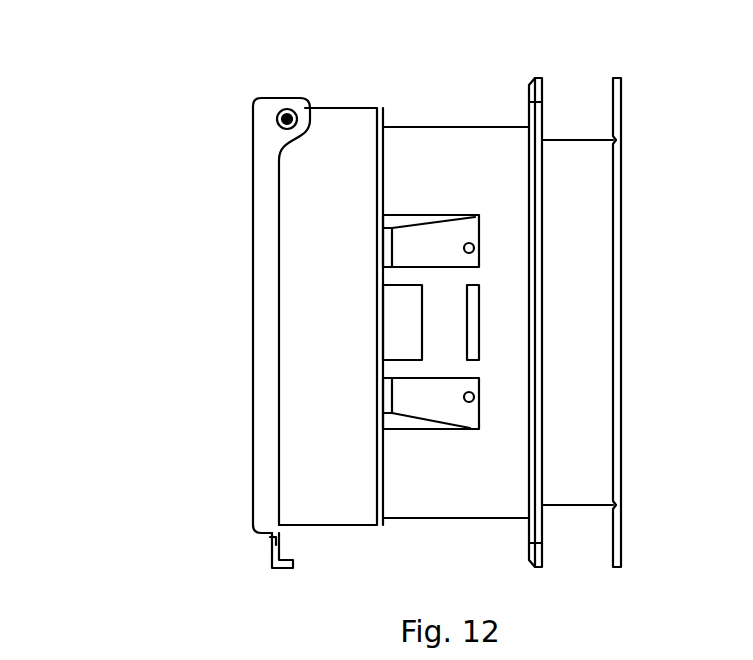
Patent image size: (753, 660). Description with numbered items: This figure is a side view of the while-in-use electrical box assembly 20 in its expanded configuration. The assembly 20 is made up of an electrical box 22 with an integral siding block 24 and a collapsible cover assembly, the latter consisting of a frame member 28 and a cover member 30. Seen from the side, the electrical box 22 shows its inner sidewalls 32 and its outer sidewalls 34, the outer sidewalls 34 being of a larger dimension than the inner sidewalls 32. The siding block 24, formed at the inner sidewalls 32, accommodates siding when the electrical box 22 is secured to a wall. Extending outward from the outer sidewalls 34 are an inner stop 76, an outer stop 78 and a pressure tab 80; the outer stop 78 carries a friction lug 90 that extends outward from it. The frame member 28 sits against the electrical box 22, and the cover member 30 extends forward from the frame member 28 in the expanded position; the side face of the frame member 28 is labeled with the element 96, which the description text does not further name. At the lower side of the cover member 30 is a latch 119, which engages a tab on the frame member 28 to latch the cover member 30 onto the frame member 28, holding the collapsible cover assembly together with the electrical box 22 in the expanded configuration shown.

The electrical box assembly 20 is at (150, 146).
The electrical box 22 is at (456, 127).
The siding block 24 is at (573, 518).
The frame member 28 is at (343, 108).
The cover member 30 is at (252, 318).
The inner sidewalls 32 is at (577, 322).
The outer sidewalls 34 is at (456, 322).
The inner stop 76 is at (474, 322).
The outer stops 78 is at (438, 245).
The pressure tab 80 is at (403, 332).
The friction lug 90 is at (474, 397).
The face plate 96 is at (326, 227).
The latch 119 is at (270, 551).